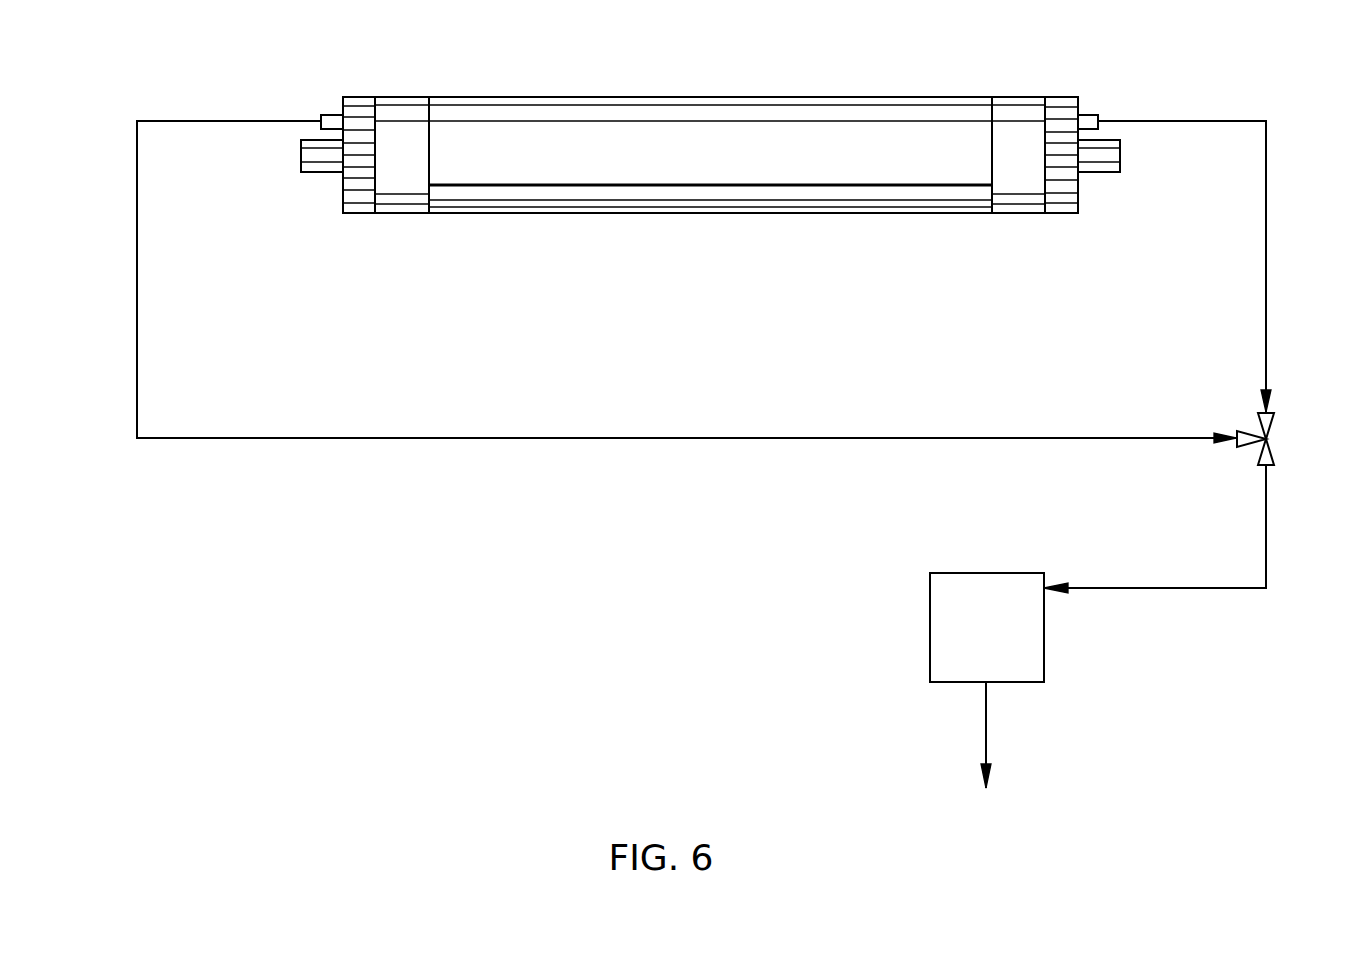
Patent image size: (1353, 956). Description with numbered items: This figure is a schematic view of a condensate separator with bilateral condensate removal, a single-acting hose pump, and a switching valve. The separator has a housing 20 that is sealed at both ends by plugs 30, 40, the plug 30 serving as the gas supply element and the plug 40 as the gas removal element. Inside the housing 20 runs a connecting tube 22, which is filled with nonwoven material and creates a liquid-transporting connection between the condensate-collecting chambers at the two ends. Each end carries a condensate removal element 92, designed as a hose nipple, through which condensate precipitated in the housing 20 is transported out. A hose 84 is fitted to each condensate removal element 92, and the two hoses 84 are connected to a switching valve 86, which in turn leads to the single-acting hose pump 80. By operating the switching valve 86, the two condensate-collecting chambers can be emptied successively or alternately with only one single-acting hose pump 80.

The housing 20 is at (628, 118).
The connecting tube 22 is at (663, 192).
The plug 30 is at (363, 130).
The plug 40 is at (1058, 120).
The hose pump 80 is at (969, 640).
The hose 84 is at (1266, 250).
The switching valve 86 is at (1273, 439).
The condensate removal element 92 is at (332, 120).